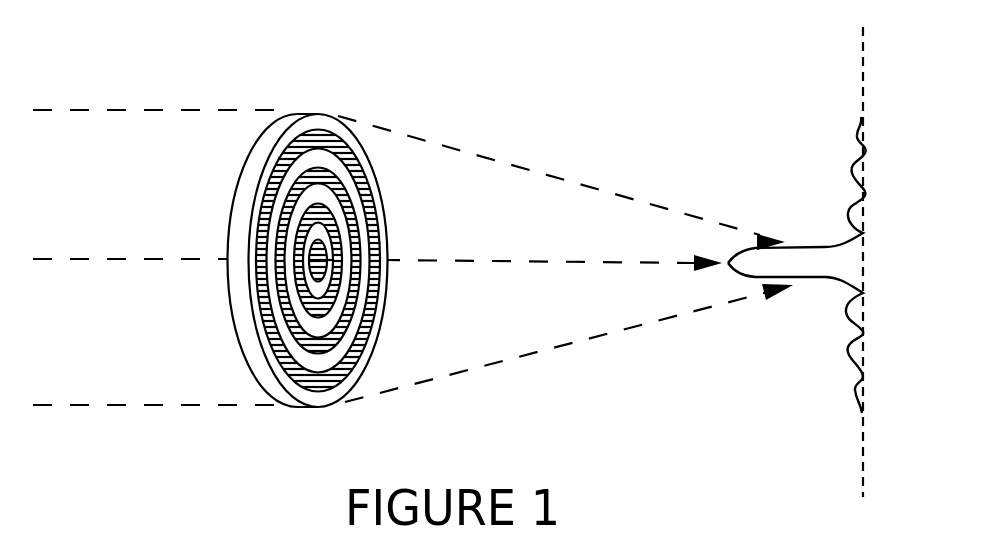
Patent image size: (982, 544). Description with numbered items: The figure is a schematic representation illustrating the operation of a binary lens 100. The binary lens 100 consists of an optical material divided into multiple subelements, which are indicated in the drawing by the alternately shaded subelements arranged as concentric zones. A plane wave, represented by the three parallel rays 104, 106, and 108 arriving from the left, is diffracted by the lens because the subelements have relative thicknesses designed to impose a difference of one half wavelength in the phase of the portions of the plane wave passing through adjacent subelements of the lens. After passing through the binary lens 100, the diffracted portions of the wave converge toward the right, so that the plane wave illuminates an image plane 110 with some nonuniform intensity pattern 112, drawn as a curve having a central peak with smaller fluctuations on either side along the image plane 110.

The binary lens 100 is at (301, 114).
The ray 104 is at (118, 109).
The ray 106 is at (121, 258).
The ray 108 is at (143, 403).
The image plane 110 is at (862, 70).
The nonuniform intensity pattern 112 is at (825, 247).